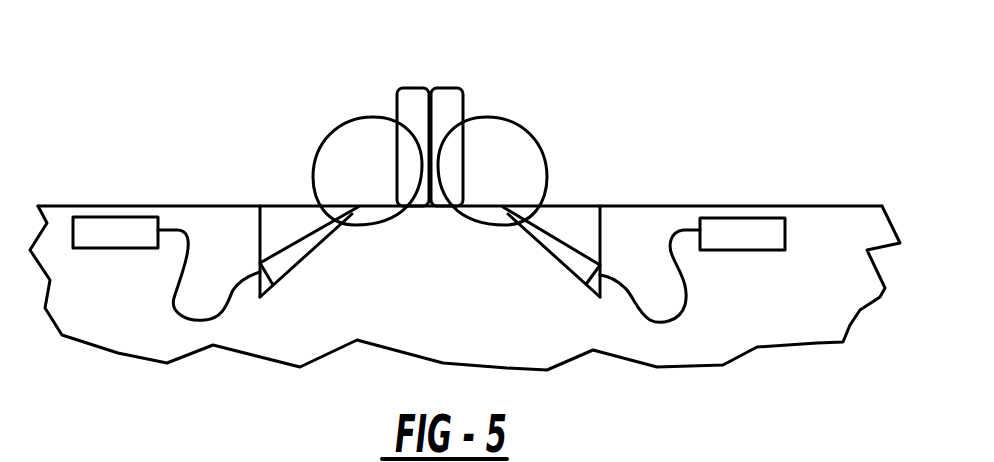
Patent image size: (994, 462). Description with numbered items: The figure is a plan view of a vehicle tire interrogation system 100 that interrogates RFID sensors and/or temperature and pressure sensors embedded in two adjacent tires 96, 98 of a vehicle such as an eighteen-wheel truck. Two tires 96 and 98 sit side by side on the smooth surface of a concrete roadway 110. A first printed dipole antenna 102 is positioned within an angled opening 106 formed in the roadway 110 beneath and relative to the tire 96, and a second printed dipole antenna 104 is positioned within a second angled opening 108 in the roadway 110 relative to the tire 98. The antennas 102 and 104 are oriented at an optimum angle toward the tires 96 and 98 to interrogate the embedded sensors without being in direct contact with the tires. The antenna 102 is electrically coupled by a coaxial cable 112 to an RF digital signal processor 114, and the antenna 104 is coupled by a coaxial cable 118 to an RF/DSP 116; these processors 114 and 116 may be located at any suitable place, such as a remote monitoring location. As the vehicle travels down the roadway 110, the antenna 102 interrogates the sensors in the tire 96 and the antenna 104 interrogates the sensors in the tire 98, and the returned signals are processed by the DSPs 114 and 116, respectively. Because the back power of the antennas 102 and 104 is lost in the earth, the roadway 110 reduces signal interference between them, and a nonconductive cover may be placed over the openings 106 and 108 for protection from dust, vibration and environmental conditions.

The tire 96 is at (412, 90).
The tire 98 is at (447, 100).
The vehicle tire interrogation system 100 is at (643, 179).
The first printed dipole antenna 102 is at (323, 243).
The second printed dipole antenna 104 is at (542, 245).
The angled opening 106 is at (282, 220).
The angled opening 108 is at (578, 225).
The concrete roadway 110 is at (843, 227).
The coaxial cable 112 is at (178, 315).
The RF digital signal processor 114 is at (88, 220).
The RF/DSP 116 is at (743, 218).
The coaxial cable 118 is at (662, 322).